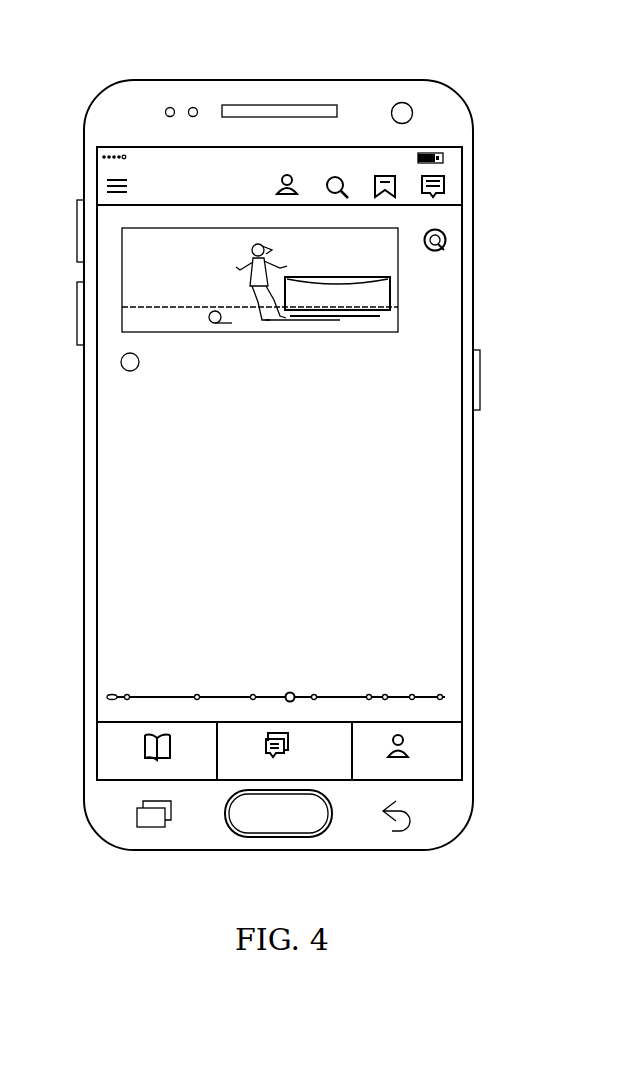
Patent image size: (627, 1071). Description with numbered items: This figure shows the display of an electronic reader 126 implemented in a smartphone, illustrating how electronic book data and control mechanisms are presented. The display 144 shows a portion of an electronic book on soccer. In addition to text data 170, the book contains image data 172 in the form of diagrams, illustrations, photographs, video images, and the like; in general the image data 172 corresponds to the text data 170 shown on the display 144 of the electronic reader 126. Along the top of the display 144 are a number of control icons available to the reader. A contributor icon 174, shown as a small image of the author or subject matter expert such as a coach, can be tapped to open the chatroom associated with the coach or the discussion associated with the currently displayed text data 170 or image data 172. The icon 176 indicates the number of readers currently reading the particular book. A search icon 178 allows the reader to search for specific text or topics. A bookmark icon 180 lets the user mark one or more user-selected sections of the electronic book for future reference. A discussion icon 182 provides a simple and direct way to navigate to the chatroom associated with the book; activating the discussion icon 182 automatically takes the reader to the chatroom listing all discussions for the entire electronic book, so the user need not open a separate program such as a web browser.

The electronic reader 126 is at (549, 135).
The display 144 is at (447, 430).
The text data 170 is at (400, 576).
The image data 172 is at (398, 315).
The contributor icon 174 is at (446, 249).
The icon 176 is at (290, 177).
The search icon 178 is at (343, 178).
The bookmark icon 180 is at (400, 182).
The discussion icon 182 is at (448, 187).